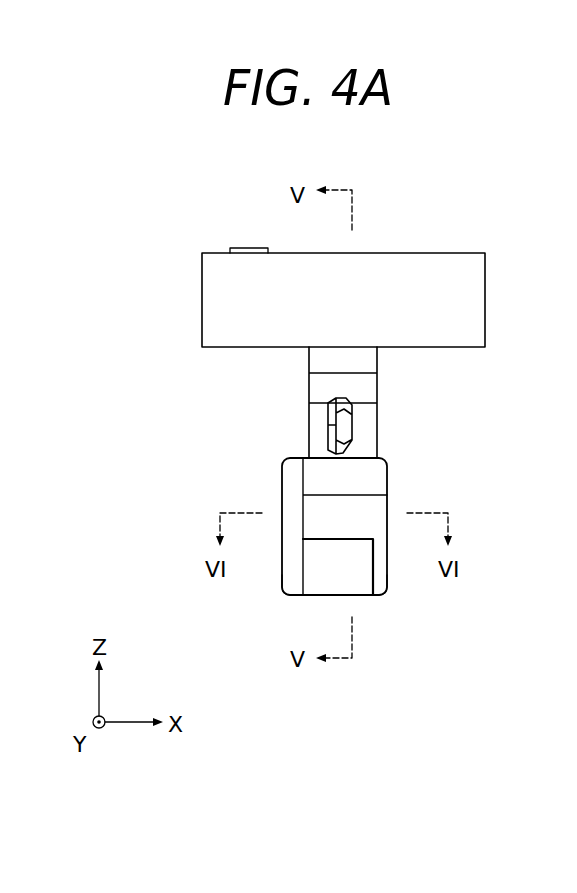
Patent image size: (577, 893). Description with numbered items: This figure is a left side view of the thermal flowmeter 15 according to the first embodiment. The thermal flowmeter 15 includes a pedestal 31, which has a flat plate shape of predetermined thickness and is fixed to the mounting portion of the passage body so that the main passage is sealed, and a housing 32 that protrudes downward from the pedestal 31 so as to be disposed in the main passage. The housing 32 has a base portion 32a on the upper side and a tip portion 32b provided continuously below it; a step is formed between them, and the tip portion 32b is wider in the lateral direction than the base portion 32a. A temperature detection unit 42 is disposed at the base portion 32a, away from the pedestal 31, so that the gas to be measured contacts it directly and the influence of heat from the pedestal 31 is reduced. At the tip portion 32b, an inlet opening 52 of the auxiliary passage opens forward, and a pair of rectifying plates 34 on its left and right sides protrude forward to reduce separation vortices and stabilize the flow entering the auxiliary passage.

The thermal flowmeter 15 is at (194, 207).
The pedestal 31 is at (213, 297).
The housing 32 is at (182, 367).
The base portion 32a is at (325, 381).
The tip portion 32b is at (290, 478).
The temperature detection unit 42 is at (345, 427).
The rectifying plates 34 is at (290, 582).
The inlet opening 52 is at (358, 583).